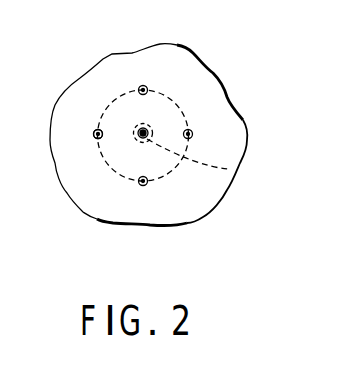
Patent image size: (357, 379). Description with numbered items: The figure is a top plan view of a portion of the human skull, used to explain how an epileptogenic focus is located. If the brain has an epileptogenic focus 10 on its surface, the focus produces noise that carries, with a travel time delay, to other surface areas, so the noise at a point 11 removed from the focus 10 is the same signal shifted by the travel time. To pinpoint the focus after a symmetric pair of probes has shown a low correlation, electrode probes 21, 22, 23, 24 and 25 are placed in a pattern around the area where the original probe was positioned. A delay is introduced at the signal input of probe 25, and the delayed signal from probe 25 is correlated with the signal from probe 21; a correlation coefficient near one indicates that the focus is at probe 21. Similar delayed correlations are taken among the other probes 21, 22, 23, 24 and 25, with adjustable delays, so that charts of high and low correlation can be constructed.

The epileptogenic focus 10 is at (228, 170).
The point 11 is at (97, 128).
The probe 21 is at (146, 132).
The probe 22 is at (146, 88).
The probe 23 is at (94, 135).
The probe 24 is at (145, 185).
The probe 25 is at (192, 134).